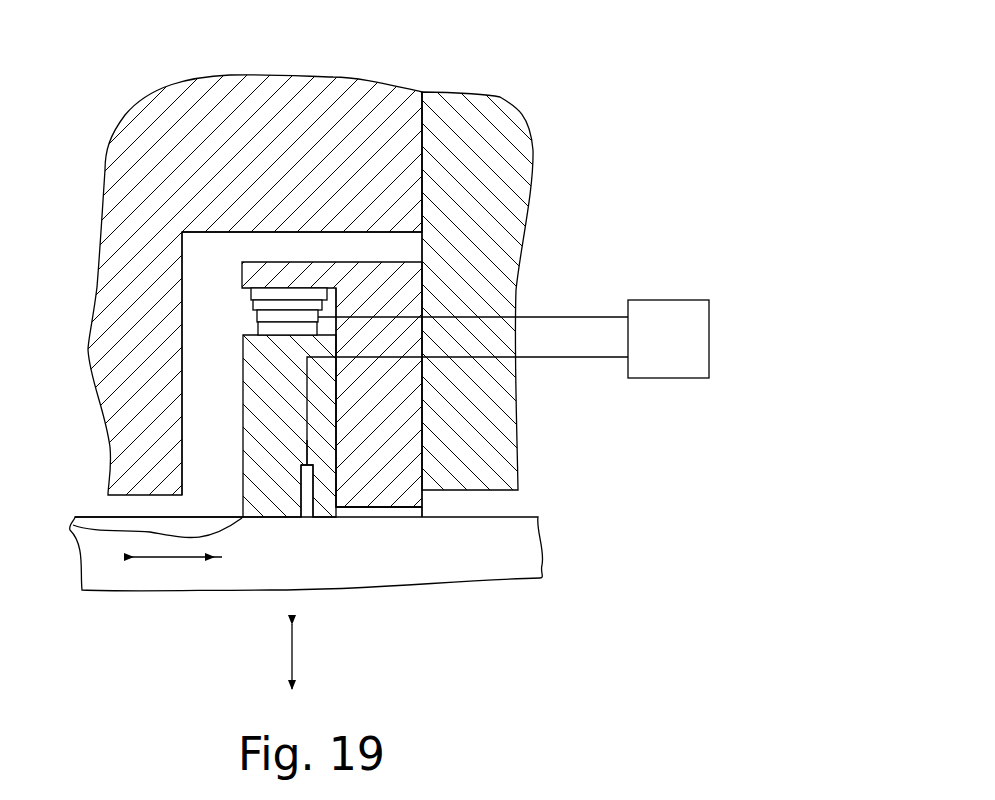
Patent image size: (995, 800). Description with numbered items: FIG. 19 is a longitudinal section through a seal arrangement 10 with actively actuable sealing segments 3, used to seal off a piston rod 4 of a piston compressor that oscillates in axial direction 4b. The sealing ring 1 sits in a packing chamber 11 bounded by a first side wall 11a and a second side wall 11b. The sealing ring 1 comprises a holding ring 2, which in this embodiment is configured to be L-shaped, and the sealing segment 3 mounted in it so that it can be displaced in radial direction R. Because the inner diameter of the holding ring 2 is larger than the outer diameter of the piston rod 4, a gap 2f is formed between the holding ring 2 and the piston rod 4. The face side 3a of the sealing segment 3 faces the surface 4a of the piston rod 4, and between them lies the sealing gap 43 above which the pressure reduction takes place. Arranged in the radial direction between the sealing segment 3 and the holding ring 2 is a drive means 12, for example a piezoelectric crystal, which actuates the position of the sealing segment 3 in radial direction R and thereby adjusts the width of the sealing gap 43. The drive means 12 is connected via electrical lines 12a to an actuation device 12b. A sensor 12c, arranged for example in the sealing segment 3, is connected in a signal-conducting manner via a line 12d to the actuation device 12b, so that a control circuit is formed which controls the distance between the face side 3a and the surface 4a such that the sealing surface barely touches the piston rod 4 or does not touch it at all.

The sealing ring 1 is at (316, 256).
The holding ring 2 is at (400, 403).
The gap 2f is at (395, 512).
The sealing segment 3 is at (270, 477).
The face side 3a is at (323, 521).
The piston rod 4 is at (528, 552).
The surface 4a is at (85, 511).
The axial direction 4b is at (162, 557).
The sealing gap 43 is at (73, 525).
The seal arrangement 10 is at (612, 62).
The packing chamber 11 is at (273, 250).
The first side wall 11a is at (513, 152).
The second side wall 11b is at (153, 348).
The drive means 12 is at (265, 312).
The electrical lines 12a is at (597, 317).
The actuation device 12b is at (698, 330).
The sensor 12c is at (307, 487).
The line 12d is at (607, 358).
The radial direction R is at (292, 660).